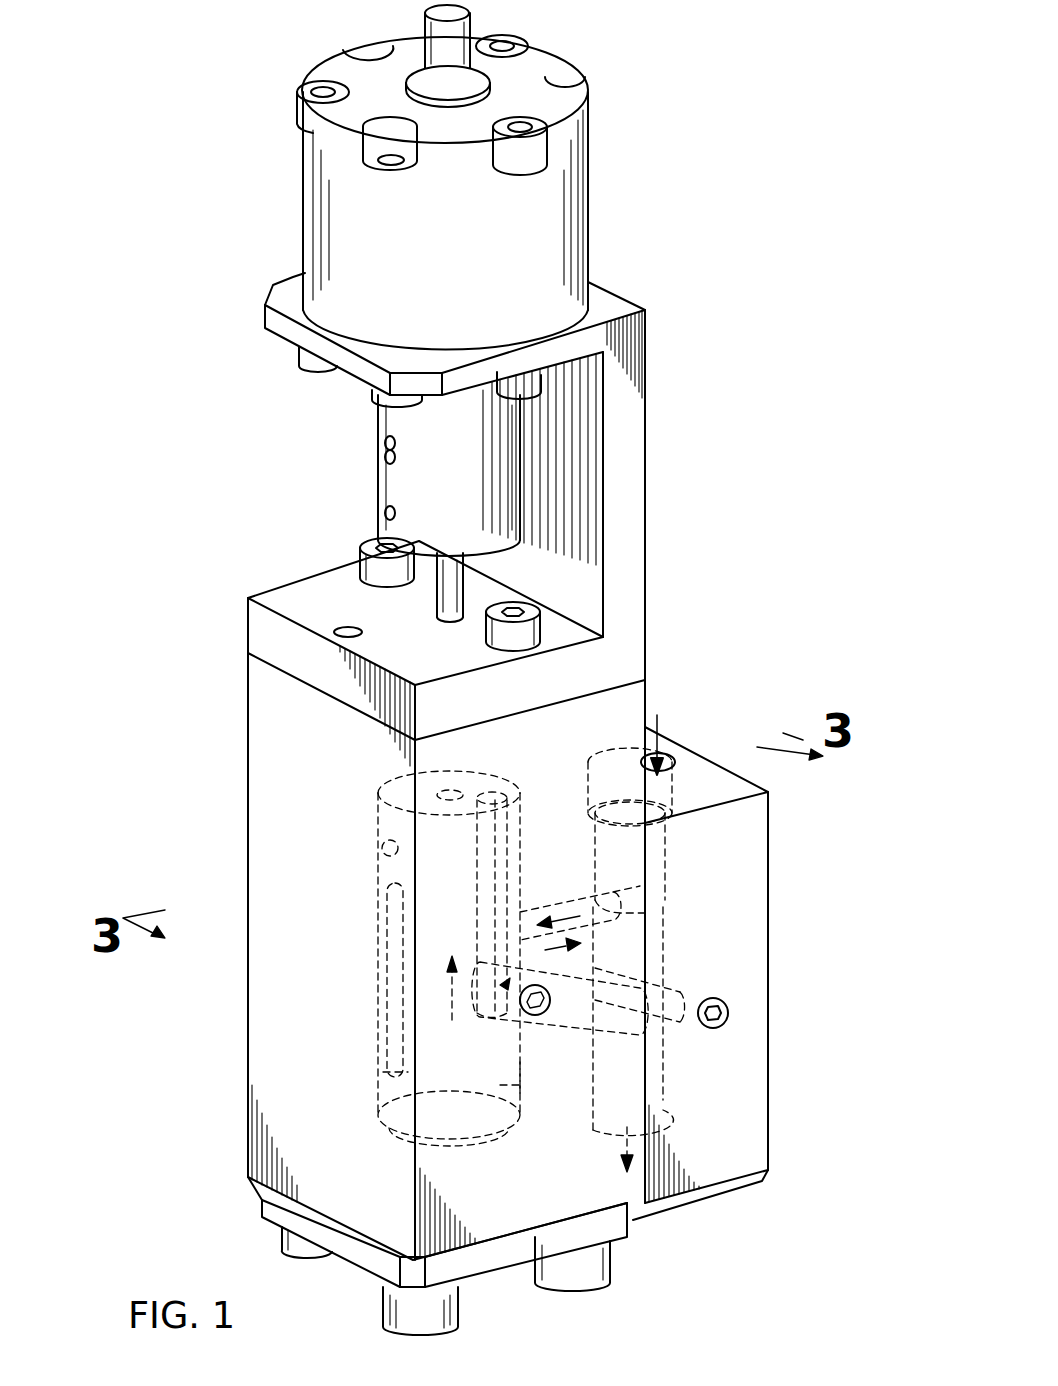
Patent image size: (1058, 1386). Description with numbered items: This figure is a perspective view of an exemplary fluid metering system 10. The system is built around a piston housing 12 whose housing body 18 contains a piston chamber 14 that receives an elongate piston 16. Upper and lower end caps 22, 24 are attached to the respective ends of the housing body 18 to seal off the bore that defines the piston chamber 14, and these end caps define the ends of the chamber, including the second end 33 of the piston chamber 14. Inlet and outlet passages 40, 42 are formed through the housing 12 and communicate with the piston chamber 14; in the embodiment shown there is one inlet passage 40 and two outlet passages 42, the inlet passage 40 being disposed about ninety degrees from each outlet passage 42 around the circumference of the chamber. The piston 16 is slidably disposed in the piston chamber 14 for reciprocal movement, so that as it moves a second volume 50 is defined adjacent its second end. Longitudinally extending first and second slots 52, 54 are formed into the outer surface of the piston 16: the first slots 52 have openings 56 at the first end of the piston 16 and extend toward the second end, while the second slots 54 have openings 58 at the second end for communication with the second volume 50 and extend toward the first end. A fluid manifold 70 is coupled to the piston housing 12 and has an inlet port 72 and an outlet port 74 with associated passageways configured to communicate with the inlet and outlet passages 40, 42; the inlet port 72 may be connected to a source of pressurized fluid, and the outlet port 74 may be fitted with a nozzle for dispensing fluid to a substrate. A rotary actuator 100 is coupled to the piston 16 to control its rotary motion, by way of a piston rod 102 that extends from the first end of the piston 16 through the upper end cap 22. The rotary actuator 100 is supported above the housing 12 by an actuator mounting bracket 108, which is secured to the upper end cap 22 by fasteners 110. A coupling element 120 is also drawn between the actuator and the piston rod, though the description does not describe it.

The fluid metering system 10 is at (780, 236).
The piston housing 12 is at (240, 782).
The piston chamber 14 is at (510, 1108).
The piston 16 is at (372, 861).
The housing body 18 is at (246, 908).
The upper end cap 22 is at (240, 690).
The lower end cap 24 is at (254, 1206).
The second end of the piston chamber 33 is at (380, 1118).
The inlet passage 40 is at (580, 893).
The outlet passage 42 is at (557, 1022).
The second volume 50 is at (510, 1148).
The first slots 52 is at (487, 900).
The second slots 54 is at (385, 978).
The openings of first slots 56 is at (415, 772).
The openings of second slots 58 is at (388, 1078).
The fluid manifold 70 is at (768, 928).
The inlet port 72 is at (666, 757).
The outlet port 74 is at (665, 1092).
The rotary actuator 100 is at (593, 184).
The piston rod 102 is at (466, 584).
The actuator mounting bracket 108 is at (650, 482).
The fasteners 110 is at (358, 566).
The coupling 120 is at (373, 461).